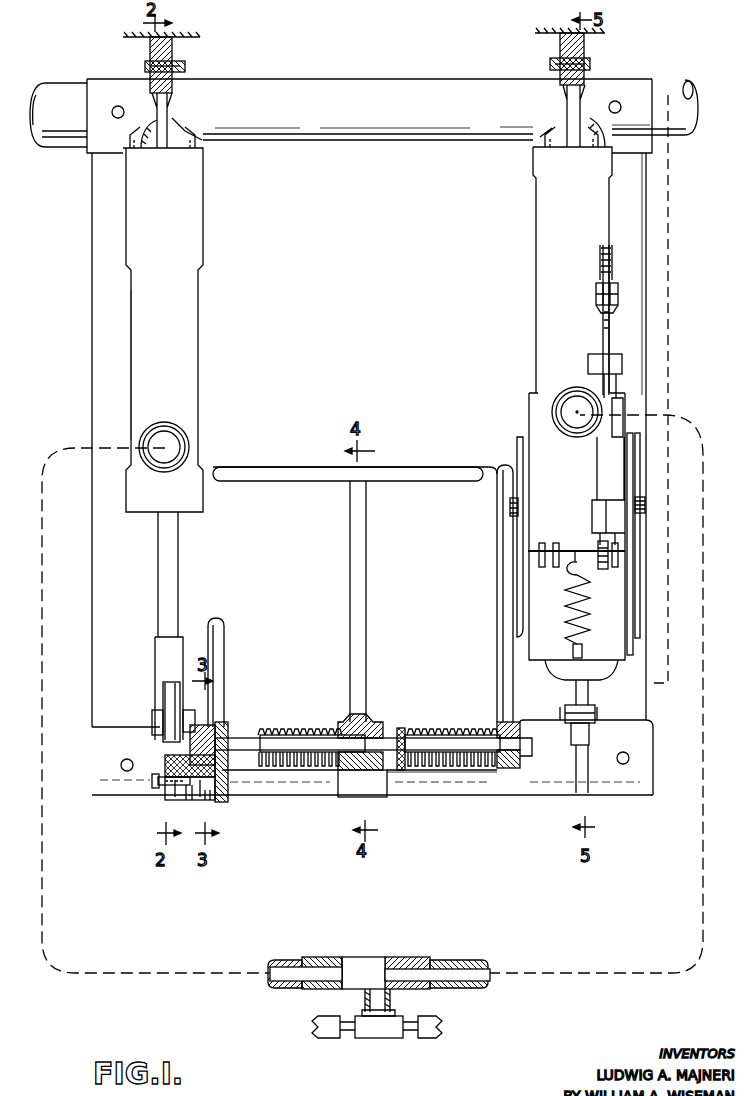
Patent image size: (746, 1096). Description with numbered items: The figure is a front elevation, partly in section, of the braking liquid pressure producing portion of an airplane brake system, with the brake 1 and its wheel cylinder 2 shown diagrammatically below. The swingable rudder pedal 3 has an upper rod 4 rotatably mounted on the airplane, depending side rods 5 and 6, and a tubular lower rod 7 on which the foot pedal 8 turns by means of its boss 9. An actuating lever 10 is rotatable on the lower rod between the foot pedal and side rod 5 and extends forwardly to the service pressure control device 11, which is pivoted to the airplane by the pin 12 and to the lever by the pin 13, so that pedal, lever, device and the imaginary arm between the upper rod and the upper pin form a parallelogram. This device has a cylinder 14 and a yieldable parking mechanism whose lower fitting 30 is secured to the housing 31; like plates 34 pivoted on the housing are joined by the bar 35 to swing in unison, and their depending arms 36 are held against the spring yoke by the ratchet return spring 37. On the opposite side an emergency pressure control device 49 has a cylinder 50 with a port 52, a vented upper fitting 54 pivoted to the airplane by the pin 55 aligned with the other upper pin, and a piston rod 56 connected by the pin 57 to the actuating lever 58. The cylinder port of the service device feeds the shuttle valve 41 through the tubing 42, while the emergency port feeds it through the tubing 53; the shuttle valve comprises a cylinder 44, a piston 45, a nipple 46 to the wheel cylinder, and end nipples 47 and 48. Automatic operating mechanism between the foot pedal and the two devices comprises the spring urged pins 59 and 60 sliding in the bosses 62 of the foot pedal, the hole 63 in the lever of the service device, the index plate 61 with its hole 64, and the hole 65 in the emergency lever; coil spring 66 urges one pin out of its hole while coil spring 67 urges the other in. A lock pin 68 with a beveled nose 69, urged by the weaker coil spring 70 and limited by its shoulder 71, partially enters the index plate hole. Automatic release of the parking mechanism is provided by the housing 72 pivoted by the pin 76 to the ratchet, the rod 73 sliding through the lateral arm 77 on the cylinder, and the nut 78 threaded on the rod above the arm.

The brake 1 is at (331, 1040).
The wheel cylinder 2 is at (371, 1040).
The rudder pedal 3 is at (655, 391).
The upper rod 4 is at (411, 127).
The side rod 5 is at (643, 266).
The side rod 6 is at (110, 313).
The lower rod 7 is at (440, 782).
The foot pedal 8 is at (413, 467).
The boss 9 is at (410, 792).
The actuating lever 10 is at (586, 760).
The service pressure control device 11 is at (612, 226).
The pin 12 is at (590, 62).
The pin 13 is at (596, 712).
The cylinder 14 is at (540, 231).
The lower fitting 30 is at (576, 686).
The housing 31 is at (620, 646).
The plates 34 is at (636, 453).
The bar 35 is at (566, 550).
The depending arms 36 is at (640, 598).
The ratchet return spring 37 is at (588, 608).
The shuttle valve 41 is at (405, 956).
The tubing 42 is at (705, 761).
The cylinder 44 is at (330, 958).
The piston 45 is at (383, 962).
The nipple 46 is at (396, 1005).
The nipple 47 is at (462, 960).
The nipple 48 is at (283, 960).
The emergency pressure control device 49 is at (201, 325).
The cylinder 50 is at (192, 377).
The port 52 is at (178, 447).
The tubing 53 is at (46, 899).
The upper fitting 54 is at (184, 130).
The pin 55 is at (186, 68).
The piston rod 56 is at (180, 597).
The pin 57 is at (186, 713).
The actuating lever 58 is at (160, 743).
The pin 59 is at (451, 745).
The pin 60 is at (303, 745).
The index plate 61 is at (221, 734).
The bosses 62 is at (507, 730).
The hole 63 is at (522, 752).
The hole 64 is at (224, 792).
The hole 65 is at (230, 762).
The coil spring 66 is at (425, 728).
The coil spring 67 is at (322, 730).
The lock pin 68 is at (191, 800).
The beveled nose 69 is at (218, 802).
The coil spring 70 is at (183, 794).
The shoulder 71 is at (158, 781).
The housing 72 is at (600, 470).
The rod 73 is at (600, 318).
The pin 76 is at (622, 560).
The lateral arm 77 is at (618, 363).
The nut 78 is at (619, 296).